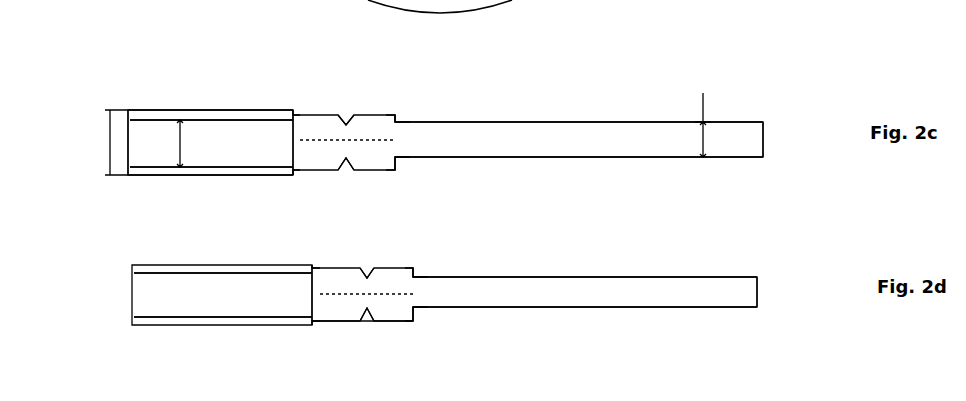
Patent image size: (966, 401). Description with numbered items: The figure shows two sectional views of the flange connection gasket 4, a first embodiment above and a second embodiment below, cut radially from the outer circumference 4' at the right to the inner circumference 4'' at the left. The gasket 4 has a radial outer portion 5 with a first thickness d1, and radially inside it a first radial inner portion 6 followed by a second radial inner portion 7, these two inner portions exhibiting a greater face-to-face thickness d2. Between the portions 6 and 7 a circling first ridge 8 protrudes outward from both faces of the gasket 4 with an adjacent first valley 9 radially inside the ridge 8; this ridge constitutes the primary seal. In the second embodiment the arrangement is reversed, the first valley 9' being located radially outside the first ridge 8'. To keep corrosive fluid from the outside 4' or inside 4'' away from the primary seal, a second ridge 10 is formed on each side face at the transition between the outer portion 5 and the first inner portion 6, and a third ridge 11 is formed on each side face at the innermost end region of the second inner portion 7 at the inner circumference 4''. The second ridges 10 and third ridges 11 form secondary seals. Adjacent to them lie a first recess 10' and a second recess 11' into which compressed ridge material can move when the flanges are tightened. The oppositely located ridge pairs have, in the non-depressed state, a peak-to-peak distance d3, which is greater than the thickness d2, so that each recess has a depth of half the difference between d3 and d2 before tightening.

In FIG. 2C, the gasket 4 is at (445, 94).
In FIG. 2D, the gasket 4 is at (444, 295).
In FIG. 2C, the outer circumference 4' is at (794, 121).
In FIG. 2D, the outer circumference 4' is at (787, 280).
In FIG. 2C, the inner circumference 4'' is at (211, 114).
In FIG. 2D, the inner circumference 4'' is at (223, 295).
In FIG. 2C, the radial outer portion 5 is at (515, 125).
In FIG. 2D, the radial outer portion 5 is at (546, 276).
In FIG. 2C, the first radial inner portion 6 is at (378, 140).
In FIG. 2D, the first radial inner portion 6 is at (390, 290).
In FIG. 2C, the second radial inner portion 7 is at (248, 108).
In FIG. 2D, the second radial inner portion 7 is at (343, 300).
In FIG. 2C, the first ridge 8 is at (345, 102).
In FIG. 2D, the first ridge 8' is at (361, 253).
In FIG. 2C, the first valley 9 is at (320, 83).
In FIG. 2D, the first valley 9' is at (381, 273).
In FIG. 2C, the second ridge 10 is at (433, 114).
In FIG. 2D, the second ridge 10 is at (454, 292).
In FIG. 2C, the first recess 10' is at (401, 134).
In FIG. 2D, the first recess 10' is at (419, 295).
In FIG. 2C, the third ridge 11 is at (259, 134).
In FIG. 2D, the third ridge 11 is at (271, 278).
In FIG. 2C, the second recess 11' is at (283, 113).
In FIG. 2D, the second recess 11' is at (314, 299).
In FIG. 2C, the first thickness d1 is at (696, 125).
In FIG. 2C, the second thickness d2 is at (170, 143).
In FIG. 2C, the first peak-to-peak distance d3 is at (109, 142).